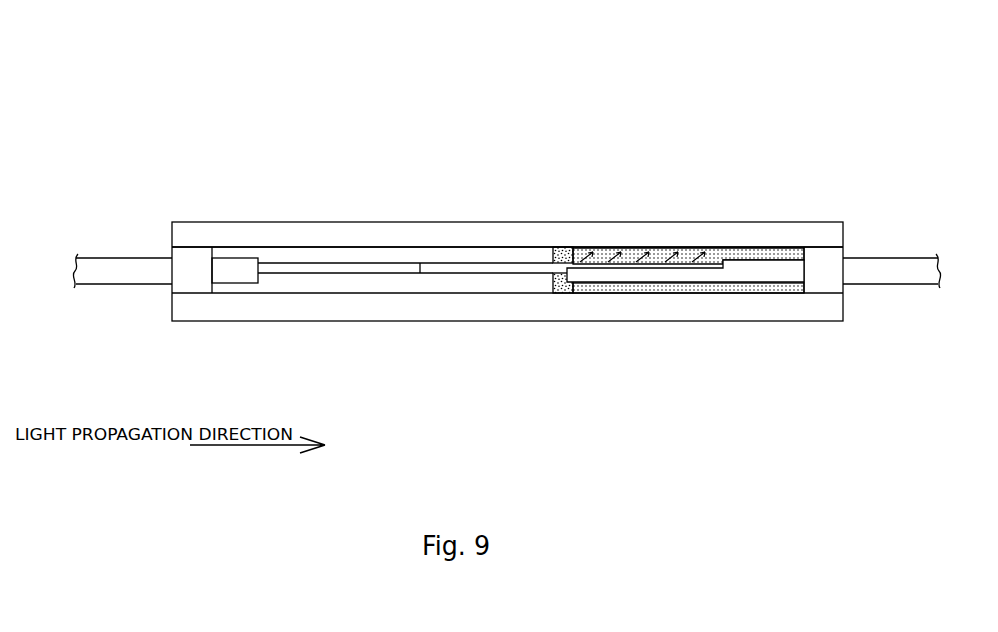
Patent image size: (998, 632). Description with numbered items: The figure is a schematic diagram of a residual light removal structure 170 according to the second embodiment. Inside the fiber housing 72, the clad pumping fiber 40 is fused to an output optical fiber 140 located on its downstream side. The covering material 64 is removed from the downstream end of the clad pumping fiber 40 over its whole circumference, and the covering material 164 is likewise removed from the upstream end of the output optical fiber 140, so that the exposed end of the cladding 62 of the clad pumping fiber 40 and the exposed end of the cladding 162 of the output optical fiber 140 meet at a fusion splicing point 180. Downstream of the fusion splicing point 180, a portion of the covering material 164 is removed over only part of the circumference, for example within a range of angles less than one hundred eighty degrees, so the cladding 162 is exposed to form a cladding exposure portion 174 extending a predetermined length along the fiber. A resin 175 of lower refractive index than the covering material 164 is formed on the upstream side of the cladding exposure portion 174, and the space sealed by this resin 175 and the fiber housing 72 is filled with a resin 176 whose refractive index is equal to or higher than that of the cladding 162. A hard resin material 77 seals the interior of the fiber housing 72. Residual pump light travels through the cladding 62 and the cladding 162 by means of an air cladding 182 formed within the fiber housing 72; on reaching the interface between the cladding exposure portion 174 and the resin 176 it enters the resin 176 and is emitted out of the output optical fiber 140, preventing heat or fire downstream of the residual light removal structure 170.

The residual light removal structure 170 is at (579, 212).
The fiber housing 72 is at (908, 123).
The clad pumping fiber 40 is at (108, 243).
The output optical fiber 140 is at (907, 240).
The air cladding 182 is at (383, 247).
The cladding exposure portion 174 is at (601, 247).
The resin 176 is at (694, 248).
The hard resin material 77 is at (196, 285).
The covering material 64 is at (233, 276).
The cladding 62 is at (330, 270).
The fusion splicing point 180 is at (421, 265).
The cladding 162 is at (478, 270).
The resin 175 is at (563, 285).
The covering material 164 is at (760, 272).